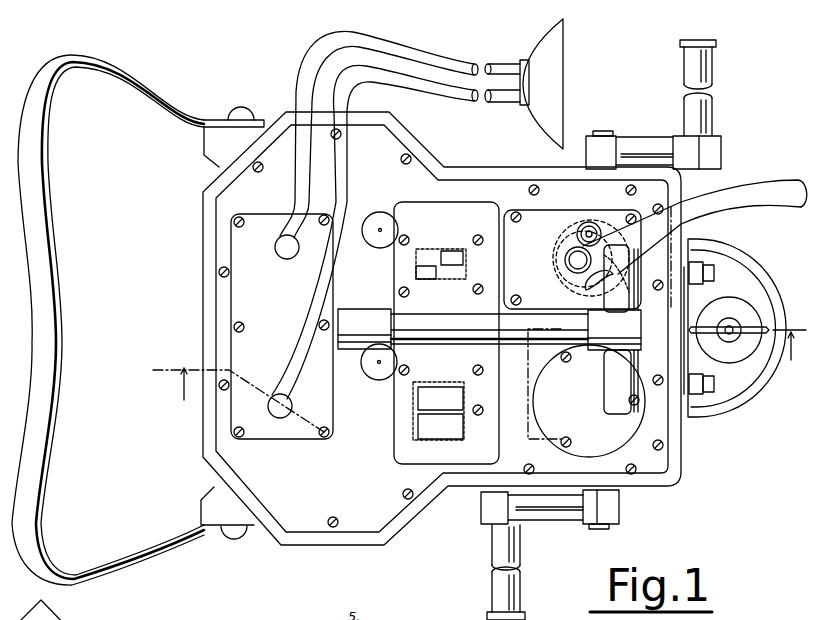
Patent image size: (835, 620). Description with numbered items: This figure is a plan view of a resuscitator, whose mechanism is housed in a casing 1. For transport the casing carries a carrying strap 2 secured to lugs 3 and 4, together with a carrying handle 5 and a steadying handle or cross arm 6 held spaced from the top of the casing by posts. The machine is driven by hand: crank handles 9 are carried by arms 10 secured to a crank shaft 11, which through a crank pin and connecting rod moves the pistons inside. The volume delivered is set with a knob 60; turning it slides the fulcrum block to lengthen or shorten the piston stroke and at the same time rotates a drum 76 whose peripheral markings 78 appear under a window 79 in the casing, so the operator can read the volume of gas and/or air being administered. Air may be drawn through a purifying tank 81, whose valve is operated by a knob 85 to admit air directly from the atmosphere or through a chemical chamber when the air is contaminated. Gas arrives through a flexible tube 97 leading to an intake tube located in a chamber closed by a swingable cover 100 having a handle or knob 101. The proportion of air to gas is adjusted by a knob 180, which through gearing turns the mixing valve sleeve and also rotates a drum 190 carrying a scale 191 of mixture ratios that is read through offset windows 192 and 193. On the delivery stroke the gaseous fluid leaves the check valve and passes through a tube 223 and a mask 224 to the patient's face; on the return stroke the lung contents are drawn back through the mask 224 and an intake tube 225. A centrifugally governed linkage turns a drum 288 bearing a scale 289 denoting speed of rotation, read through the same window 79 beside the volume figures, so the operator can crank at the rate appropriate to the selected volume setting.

The casing 1 is at (194, 240).
The carrying strap 2 is at (163, 92).
The lug 3 is at (203, 137).
The lug 4 is at (193, 500).
The carrying handle 5 is at (520, 338).
The steadying handle or cross arm 6 is at (633, 278).
The crank handle 9 is at (712, 102).
The arm 10 is at (655, 138).
The crank shaft 11 is at (602, 129).
The knob 60 is at (368, 371).
The drum 76 is at (444, 420).
The peripheral marking 78 is at (427, 388).
The window 79 is at (447, 387).
The purifying tank 81 is at (756, 412).
The knob 85 is at (737, 315).
The flexible tube 97 is at (757, 172).
The swingable cover 100 is at (568, 232).
The handle or knob 101 is at (585, 215).
The knob 180 is at (380, 203).
The drum 190 is at (422, 263).
The scale 191 is at (418, 278).
The window 192 is at (415, 268).
The window 193 is at (442, 252).
The tube 223 is at (307, 52).
The mask 224 is at (563, 63).
The intake tube 225 is at (441, 90).
The drum 288 is at (462, 430).
The scale 289 is at (437, 440).